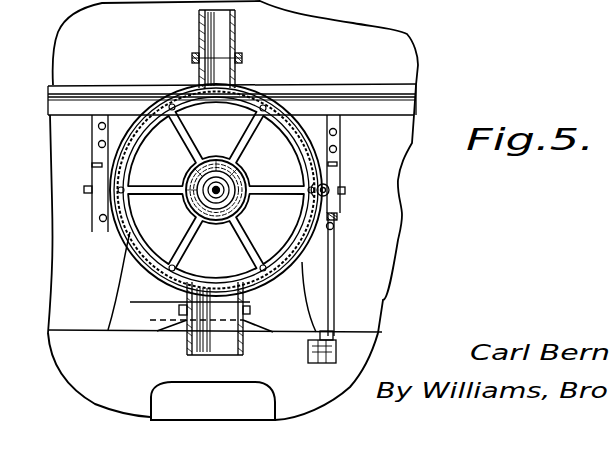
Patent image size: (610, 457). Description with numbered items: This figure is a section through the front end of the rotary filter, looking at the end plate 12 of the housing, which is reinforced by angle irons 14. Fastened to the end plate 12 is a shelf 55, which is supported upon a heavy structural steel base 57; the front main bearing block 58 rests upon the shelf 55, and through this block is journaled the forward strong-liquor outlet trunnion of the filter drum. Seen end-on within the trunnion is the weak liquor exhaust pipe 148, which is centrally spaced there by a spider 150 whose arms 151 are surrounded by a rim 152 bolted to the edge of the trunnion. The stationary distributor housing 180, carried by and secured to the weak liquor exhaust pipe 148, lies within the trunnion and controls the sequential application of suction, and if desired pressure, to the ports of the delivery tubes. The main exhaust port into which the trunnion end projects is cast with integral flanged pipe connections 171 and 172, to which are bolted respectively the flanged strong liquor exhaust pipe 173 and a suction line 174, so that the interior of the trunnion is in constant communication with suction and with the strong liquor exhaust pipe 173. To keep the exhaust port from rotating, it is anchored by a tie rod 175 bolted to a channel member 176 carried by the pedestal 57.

The end plate 12 is at (404, 62).
The angle irons 14 is at (67, 104).
The shelf 55 is at (226, 370).
The structural steel base 57 is at (110, 392).
The front main bearing block 58 is at (137, 291).
The weak liquor exhaust pipe 148 is at (213, 219).
The spider 150 is at (188, 182).
The arms 151 is at (263, 190).
The rim 152 is at (197, 105).
The flanged pipe connection 171 is at (130, 302).
The flanged pipe connection 172 is at (238, 70).
The strong liquor exhaust pipe 173 is at (184, 349).
The suction line 174 is at (236, 42).
The tie rod 175 is at (329, 300).
The channel member 176 is at (336, 355).
The distributor housing 180 is at (203, 200).